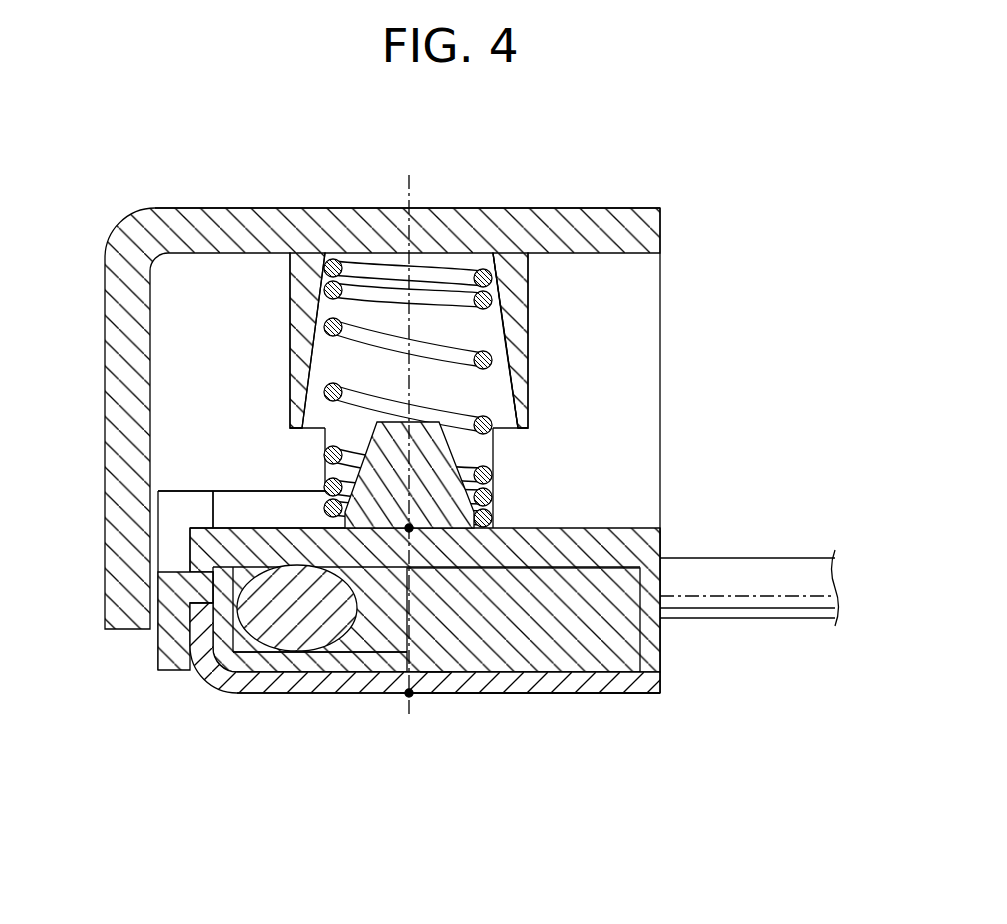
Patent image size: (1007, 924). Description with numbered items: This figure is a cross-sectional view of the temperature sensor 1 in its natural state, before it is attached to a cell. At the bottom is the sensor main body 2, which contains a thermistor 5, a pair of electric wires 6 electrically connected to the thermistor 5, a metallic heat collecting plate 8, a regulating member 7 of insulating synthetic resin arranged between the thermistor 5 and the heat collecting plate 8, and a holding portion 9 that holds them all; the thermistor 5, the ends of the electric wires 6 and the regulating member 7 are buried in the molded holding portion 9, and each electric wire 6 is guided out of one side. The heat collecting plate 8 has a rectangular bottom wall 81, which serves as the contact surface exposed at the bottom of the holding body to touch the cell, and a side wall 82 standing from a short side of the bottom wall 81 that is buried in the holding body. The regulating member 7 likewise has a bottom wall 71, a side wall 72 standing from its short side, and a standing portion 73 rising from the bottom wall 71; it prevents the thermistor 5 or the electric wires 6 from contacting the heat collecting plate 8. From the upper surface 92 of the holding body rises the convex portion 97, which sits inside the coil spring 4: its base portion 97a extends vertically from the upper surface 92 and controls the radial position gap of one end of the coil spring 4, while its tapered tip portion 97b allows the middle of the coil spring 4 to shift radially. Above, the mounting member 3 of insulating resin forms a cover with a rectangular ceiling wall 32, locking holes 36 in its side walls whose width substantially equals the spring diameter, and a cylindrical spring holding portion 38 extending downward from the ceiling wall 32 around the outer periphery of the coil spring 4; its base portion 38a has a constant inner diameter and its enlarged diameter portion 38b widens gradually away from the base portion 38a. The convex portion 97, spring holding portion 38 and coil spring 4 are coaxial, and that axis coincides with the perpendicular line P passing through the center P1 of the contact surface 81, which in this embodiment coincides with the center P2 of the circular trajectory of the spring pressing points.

The temperature sensor 1 is at (688, 137).
The sensor main body 2 is at (640, 695).
The mounting member 3 is at (590, 208).
The ceiling wall 32 is at (243, 218).
The locking hole 36 is at (322, 458).
The spring holding portion 38 is at (530, 280).
The base portion 38a is at (470, 255).
The enlarged diameter portion 38b is at (500, 382).
The coil spring 4 is at (409, 433).
The thermistor 5 is at (301, 628).
The electric wire 6 is at (763, 575).
The regulating member 7 is at (498, 672).
The bottom wall 71 is at (367, 660).
The side wall 72 is at (227, 625).
The standing portion 73 is at (586, 636).
The heat collecting plate 8 is at (545, 693).
The bottom wall (contact surface) 81 is at (461, 683).
The side wall 82 is at (203, 548).
The holding portion 9 is at (180, 672).
The upper surface 92 is at (248, 522).
The convex portion 97 is at (452, 448).
The base portion 97a is at (495, 518).
The tip portion 97b is at (468, 463).
The perpendicular line P is at (436, 668).
The center of the contact surface P1 is at (409, 696).
The center of the trajectory P2 is at (409, 528).